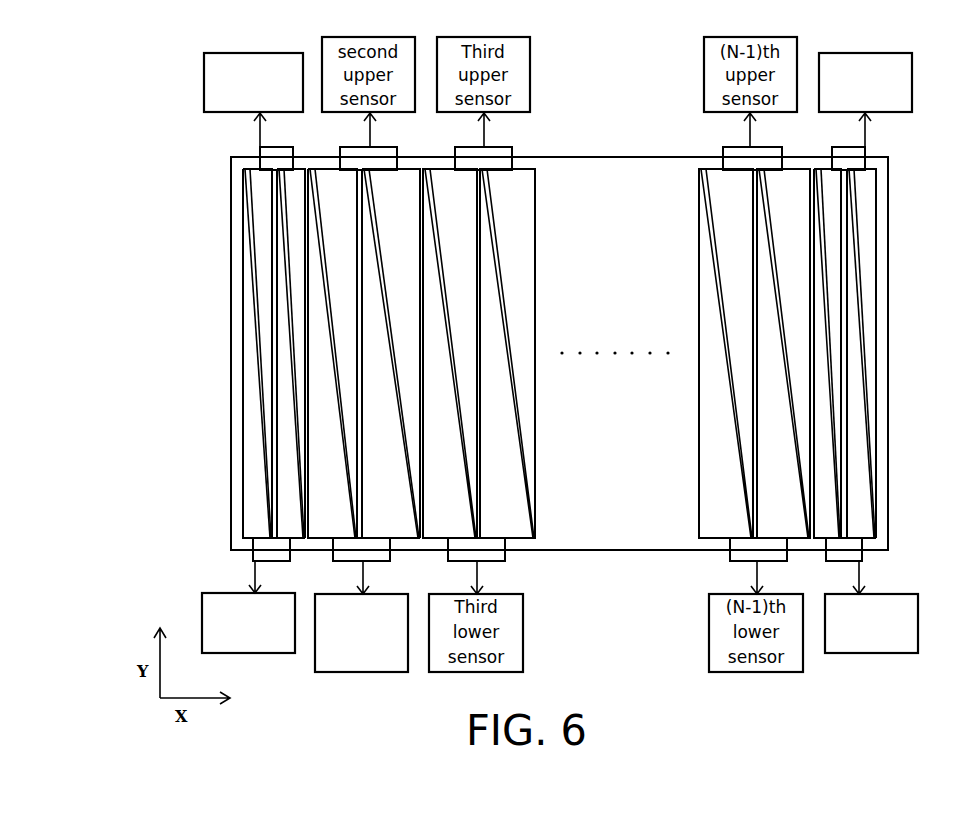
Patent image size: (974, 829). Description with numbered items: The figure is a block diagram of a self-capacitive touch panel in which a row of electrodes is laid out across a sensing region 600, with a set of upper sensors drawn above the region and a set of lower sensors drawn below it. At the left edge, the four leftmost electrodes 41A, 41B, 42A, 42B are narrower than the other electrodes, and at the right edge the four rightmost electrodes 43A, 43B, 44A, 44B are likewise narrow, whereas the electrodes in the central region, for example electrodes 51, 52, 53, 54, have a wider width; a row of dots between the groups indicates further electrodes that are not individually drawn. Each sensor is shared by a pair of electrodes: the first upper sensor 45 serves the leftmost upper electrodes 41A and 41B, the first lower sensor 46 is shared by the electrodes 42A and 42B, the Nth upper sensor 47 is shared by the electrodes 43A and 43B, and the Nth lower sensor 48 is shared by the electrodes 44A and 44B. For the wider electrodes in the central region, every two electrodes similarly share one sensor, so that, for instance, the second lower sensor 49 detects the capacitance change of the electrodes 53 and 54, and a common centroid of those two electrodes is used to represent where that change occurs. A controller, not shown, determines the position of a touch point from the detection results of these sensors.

The sensing region 600 is at (887, 393).
The electrode 41A is at (257, 170).
The electrode 41B is at (297, 172).
The electrode 42A is at (252, 470).
The electrode 42B is at (293, 538).
The electrode 51 is at (332, 172).
The electrode 52 is at (408, 173).
The electrode 53 is at (322, 538).
The electrode 54 is at (403, 538).
The electrode 43A is at (868, 223).
The electrode 43B is at (825, 173).
The electrode 44A is at (865, 540).
The electrode 44B is at (820, 540).
The first upper sensor 45 is at (263, 53).
The first lower sensor 46 is at (202, 593).
The Nth upper sensor 47 is at (872, 53).
The Nth lower sensor 48 is at (865, 653).
The second lower sensor 49 is at (365, 672).